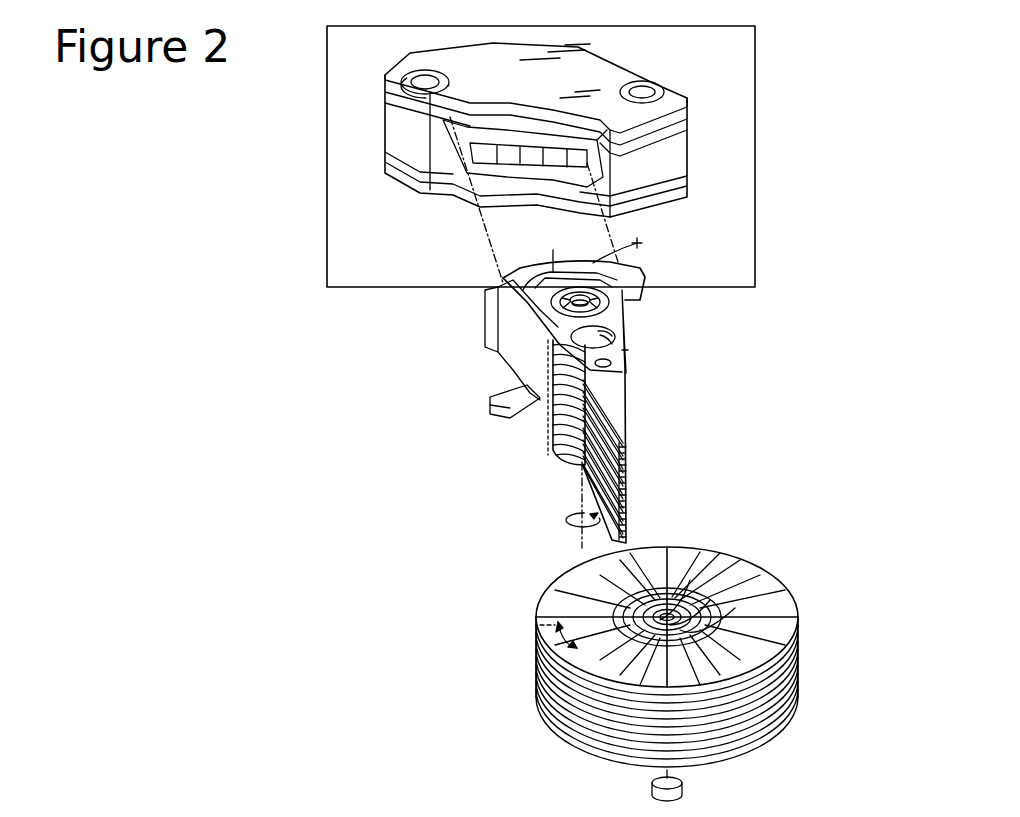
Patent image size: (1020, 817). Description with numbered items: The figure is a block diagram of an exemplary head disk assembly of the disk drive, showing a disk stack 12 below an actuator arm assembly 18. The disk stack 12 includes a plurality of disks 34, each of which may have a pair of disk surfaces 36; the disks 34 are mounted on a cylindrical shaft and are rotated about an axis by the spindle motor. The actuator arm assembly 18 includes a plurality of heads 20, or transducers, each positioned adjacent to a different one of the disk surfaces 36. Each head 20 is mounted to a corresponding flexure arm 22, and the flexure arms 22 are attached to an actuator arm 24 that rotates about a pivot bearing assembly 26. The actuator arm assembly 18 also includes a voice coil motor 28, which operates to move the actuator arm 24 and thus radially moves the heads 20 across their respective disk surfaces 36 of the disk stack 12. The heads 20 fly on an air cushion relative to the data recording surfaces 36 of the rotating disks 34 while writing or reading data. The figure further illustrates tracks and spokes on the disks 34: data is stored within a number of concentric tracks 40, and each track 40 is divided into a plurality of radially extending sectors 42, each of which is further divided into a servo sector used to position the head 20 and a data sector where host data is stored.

The disk stack 12 is at (662, 654).
The actuator arm assembly 18 is at (667, 389).
The head 20 is at (628, 440).
The flexure arm 22 is at (628, 400).
The actuator arm 24 is at (628, 349).
The pivot bearing assembly 26 is at (604, 301).
The voice coil motor 28 is at (757, 137).
The disk 34 is at (690, 742).
The disk surface 36 is at (783, 627).
The concentric track 40 is at (690, 580).
The sector 42 is at (542, 645).